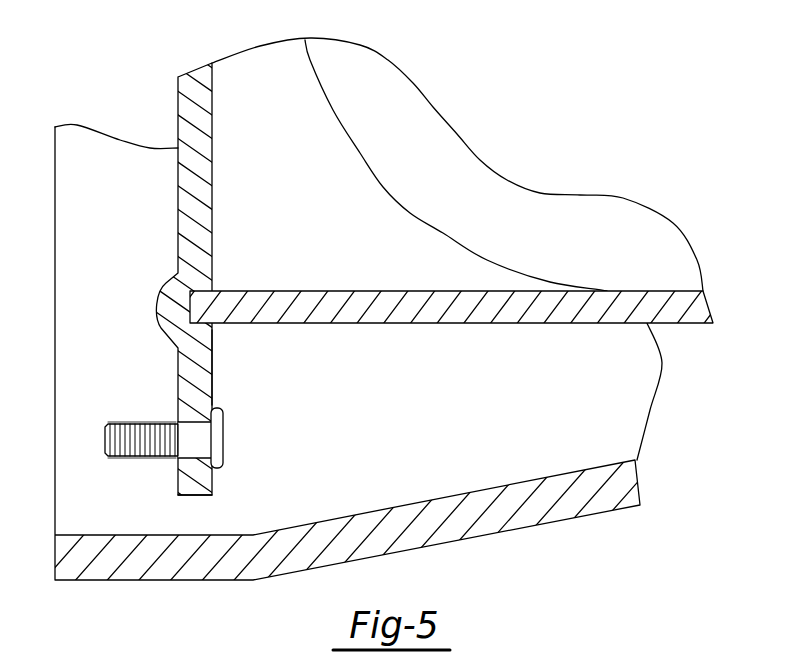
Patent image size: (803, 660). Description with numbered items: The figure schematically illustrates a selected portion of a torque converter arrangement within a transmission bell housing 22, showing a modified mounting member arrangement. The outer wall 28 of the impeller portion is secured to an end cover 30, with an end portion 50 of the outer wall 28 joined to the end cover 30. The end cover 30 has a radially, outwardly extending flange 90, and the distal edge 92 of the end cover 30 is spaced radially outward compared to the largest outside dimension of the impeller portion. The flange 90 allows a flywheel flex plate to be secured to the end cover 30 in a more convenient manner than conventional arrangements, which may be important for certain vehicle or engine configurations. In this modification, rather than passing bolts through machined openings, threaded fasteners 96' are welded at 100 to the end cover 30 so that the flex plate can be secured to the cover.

The transmission bell housing 22 is at (565, 520).
The outer wall 28 is at (470, 325).
The end cover 30 is at (176, 222).
The end portion 50 is at (260, 291).
The flange 90 is at (208, 373).
The distal edge 92 is at (193, 497).
The threaded fasteners 96' is at (260, 438).
The weld 100 is at (192, 423).